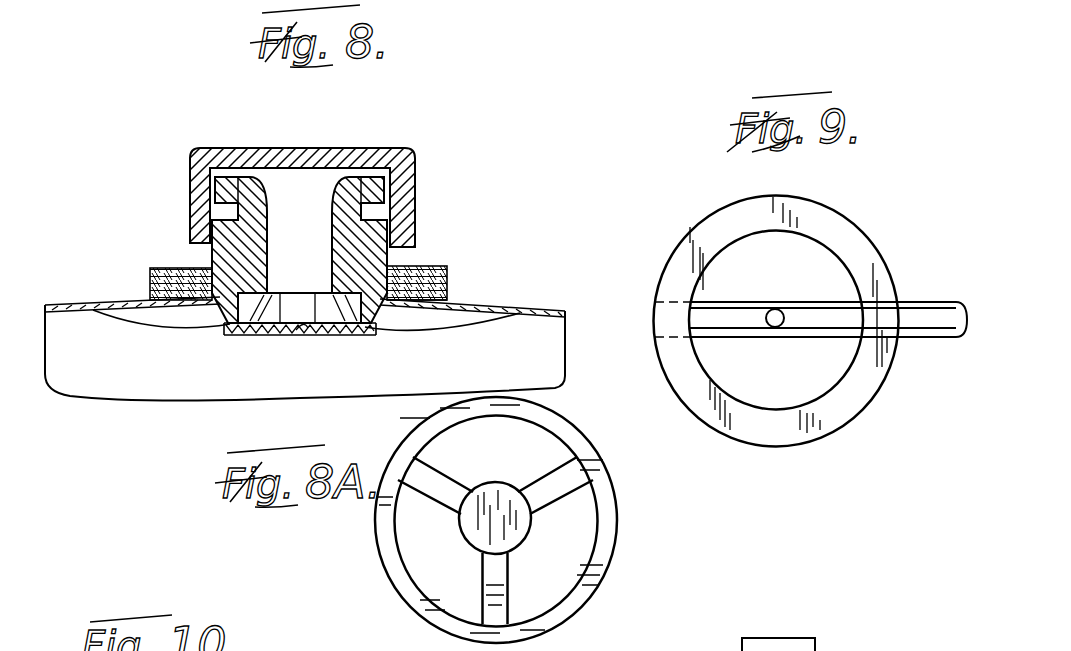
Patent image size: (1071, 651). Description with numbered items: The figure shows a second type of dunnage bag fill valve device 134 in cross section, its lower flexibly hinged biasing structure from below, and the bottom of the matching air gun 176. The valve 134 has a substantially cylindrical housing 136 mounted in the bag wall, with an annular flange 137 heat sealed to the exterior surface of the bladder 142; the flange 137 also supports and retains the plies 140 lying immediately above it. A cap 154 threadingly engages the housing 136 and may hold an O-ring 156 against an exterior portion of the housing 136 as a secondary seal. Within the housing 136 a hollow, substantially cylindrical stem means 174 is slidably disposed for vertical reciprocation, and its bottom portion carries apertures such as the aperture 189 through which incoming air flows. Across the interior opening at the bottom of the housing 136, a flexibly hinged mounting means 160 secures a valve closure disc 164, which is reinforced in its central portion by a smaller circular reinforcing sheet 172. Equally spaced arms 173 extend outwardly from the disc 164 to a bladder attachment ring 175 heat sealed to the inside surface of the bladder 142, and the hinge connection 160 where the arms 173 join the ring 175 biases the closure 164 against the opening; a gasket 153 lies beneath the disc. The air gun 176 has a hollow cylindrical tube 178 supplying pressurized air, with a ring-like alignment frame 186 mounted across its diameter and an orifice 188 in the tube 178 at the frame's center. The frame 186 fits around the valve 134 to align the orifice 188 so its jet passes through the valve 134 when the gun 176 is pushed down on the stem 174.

In FIG. 8, the dunnage bag fill valve device 134 is at (434, 227).
In FIG. 8, the valve housing 136 is at (207, 255).
In FIG. 8, the annular flange 137 is at (418, 300).
In FIG. 8, the plies 140 is at (410, 284).
In FIG. 8, the bladder 142 is at (487, 305).
In FIG. 8, the gasket 153 is at (225, 326).
In FIG. 8, the cap 154 is at (232, 148).
In FIG. 8, the O-ring 156 is at (205, 220).
In FIG. 8, the flexibly hinged mounting means 160 is at (102, 320).
In FIG. 8, the valve closure disc 164 is at (300, 330).
In FIG. 8, the circular reinforcing sheet 172 is at (333, 326).
In FIG. 8A, the circular reinforcing sheet 172 is at (472, 526).
In FIG. 8, the arms 173 is at (183, 331).
In FIG. 8A, the arms 173 is at (547, 483).
In FIG. 8, the stem means 174 is at (345, 217).
In FIG. 8, the bladder attachment ring 175 is at (70, 316).
In FIG. 8A, the bladder attachment ring 175 is at (607, 526).
In FIG. 9, the air gun 176 is at (924, 287).
In FIG. 8A, the air gun 176 is at (643, 646).
In FIG. 9, the hollow cylindrical tube 178 is at (926, 330).
In FIG. 9, the ring-like alignment frame 186 is at (845, 403).
In FIG. 9, the orifice 188 is at (777, 309).
In FIG. 8, the aperture 189 is at (297, 305).